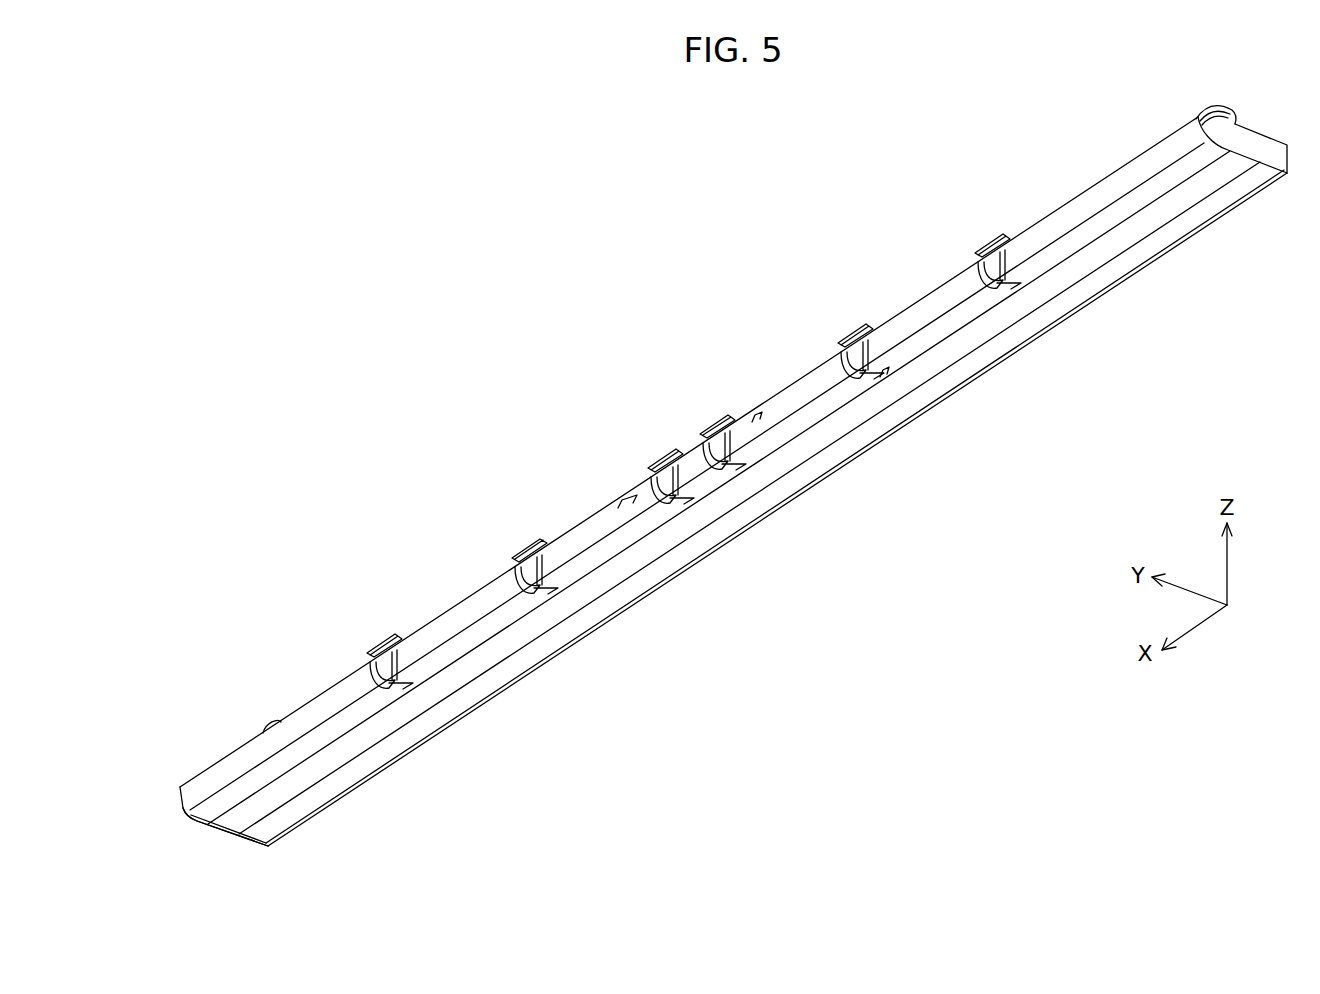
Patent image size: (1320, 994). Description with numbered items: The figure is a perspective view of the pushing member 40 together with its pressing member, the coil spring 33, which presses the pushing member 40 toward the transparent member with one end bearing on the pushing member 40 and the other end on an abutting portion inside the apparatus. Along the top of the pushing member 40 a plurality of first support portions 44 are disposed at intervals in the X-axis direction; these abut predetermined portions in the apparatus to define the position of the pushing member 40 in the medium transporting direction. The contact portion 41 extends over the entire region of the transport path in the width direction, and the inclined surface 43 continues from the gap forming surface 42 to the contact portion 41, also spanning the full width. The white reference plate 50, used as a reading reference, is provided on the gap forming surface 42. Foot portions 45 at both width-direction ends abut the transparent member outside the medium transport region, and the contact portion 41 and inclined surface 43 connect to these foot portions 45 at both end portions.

The coil spring 33 is at (270, 724).
The pushing member 40 is at (323, 705).
The contact portion 41 is at (950, 402).
The gap forming surface 42 is at (742, 484).
The inclined surface 43 is at (865, 438).
The first support portions 44 is at (993, 238).
The foot portions 45 is at (228, 848).
The white reference plate 50 is at (792, 452).